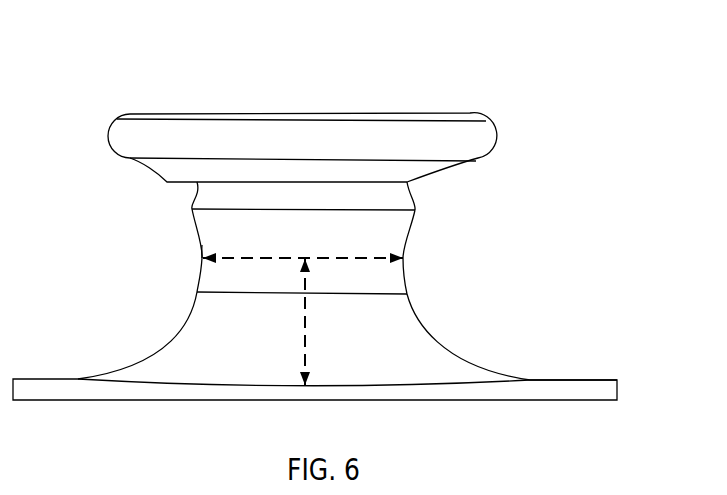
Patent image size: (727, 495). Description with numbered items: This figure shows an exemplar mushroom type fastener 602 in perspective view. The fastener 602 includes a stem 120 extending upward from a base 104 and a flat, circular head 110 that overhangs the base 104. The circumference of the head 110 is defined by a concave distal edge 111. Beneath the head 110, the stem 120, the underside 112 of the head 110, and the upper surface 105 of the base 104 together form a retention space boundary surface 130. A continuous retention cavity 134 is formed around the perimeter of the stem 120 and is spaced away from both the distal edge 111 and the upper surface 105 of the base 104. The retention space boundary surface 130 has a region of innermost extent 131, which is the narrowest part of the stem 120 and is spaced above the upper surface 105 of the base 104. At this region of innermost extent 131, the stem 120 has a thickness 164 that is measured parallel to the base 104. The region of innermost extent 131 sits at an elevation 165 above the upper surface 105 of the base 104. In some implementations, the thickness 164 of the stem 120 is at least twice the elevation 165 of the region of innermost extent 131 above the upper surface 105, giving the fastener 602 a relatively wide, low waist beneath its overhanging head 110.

The mushroom type fastener 602 is at (486, 80).
The head 110 is at (297, 118).
The distal edge 111 is at (500, 133).
The underside of head 112 is at (467, 163).
The retention cavity 134 is at (187, 193).
The stem 120 is at (385, 282).
The region of innermost extent 131 is at (202, 259).
The thickness 164 is at (283, 258).
The elevation 165 is at (306, 328).
The retention space boundary surface 130 is at (422, 318).
The upper surface of base 105 is at (581, 381).
The base 104 is at (580, 393).